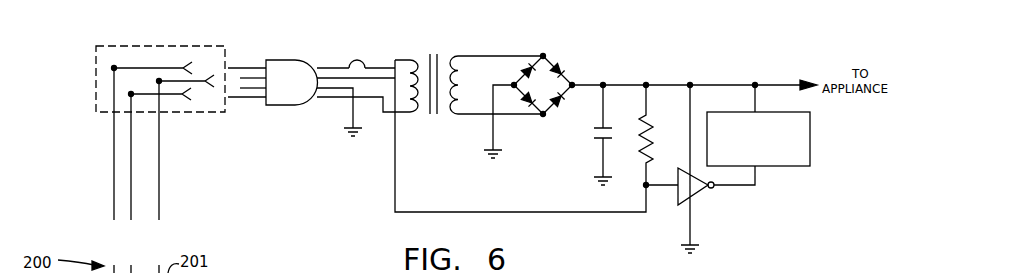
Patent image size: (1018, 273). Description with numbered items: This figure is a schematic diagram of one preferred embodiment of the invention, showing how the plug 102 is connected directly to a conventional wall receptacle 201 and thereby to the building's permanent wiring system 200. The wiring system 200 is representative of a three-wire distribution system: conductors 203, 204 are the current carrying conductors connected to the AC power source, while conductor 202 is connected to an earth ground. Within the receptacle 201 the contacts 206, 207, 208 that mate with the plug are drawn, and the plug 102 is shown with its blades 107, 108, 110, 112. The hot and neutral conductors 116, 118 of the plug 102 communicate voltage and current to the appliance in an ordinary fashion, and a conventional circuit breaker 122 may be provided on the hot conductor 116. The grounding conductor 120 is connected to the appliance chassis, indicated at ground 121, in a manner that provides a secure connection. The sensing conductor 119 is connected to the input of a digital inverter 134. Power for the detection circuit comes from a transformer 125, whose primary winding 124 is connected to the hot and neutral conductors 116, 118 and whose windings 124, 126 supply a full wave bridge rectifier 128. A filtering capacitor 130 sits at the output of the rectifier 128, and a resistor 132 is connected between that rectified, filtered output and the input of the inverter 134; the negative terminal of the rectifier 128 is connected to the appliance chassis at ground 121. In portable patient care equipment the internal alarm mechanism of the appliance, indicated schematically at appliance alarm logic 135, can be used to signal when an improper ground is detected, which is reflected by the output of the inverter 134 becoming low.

The permanent wiring system 200 is at (93, 204).
The wall receptacle 201 is at (159, 34).
The conductor 202 is at (159, 164).
The conductor 203 is at (131, 176).
The conductor 204 is at (114, 139).
The connector contact 206 is at (143, 67).
The connector contact 207 is at (176, 96).
The connector contact 208 is at (200, 78).
The plug 102 is at (296, 50).
The input line 107 is at (255, 68).
The input line 108 is at (240, 97).
The input line 110 is at (253, 88).
The input line 112 is at (255, 78).
The hot conductor 116 is at (321, 67).
The neutral conductor 118 is at (329, 98).
The sensing conductor 119 is at (378, 77).
The grounding conductor 120 is at (347, 120).
The ground 121 is at (362, 135).
The circuit breaker 122 is at (357, 60).
The primary winding 124 is at (418, 60).
The transformer 125 is at (437, 124).
The winding 126 is at (459, 57).
The full wave bridge rectifier 128 is at (565, 61).
The filtering capacitor 130 is at (600, 158).
The resistor 132 is at (650, 126).
The digital inverter 134 is at (678, 197).
The appliance alarm logic 135 is at (810, 140).